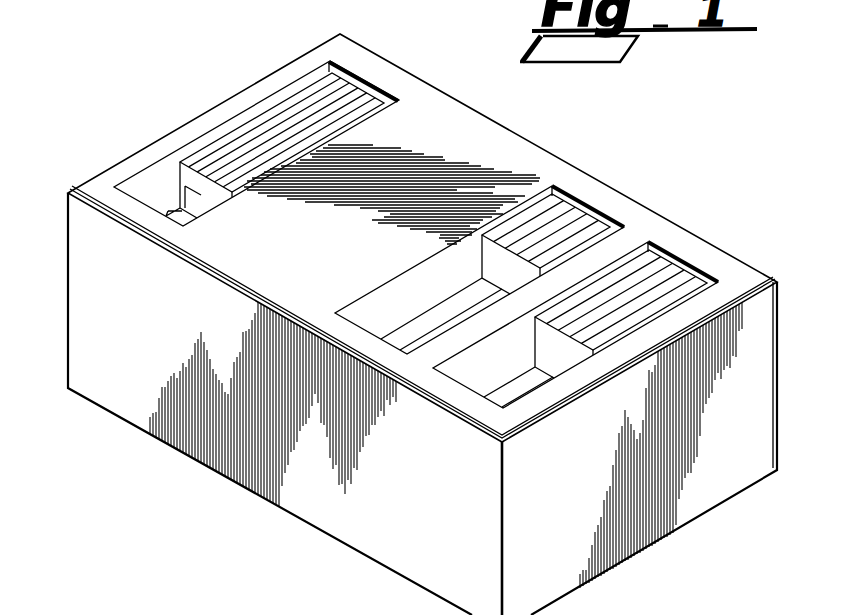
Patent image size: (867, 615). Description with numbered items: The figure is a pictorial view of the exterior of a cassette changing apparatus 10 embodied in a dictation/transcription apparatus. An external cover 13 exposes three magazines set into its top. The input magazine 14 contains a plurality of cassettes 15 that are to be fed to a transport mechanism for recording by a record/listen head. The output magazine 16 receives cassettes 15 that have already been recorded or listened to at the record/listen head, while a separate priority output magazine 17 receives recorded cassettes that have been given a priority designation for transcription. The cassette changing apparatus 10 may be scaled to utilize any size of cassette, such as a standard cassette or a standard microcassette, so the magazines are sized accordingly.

The cassette changing apparatus 10 is at (617, 147).
The external cover 13 is at (437, 96).
The input magazine 14 is at (160, 185).
The cassettes 15 is at (222, 149).
The output magazine 16 is at (384, 305).
The priority output magazine 17 is at (480, 362).